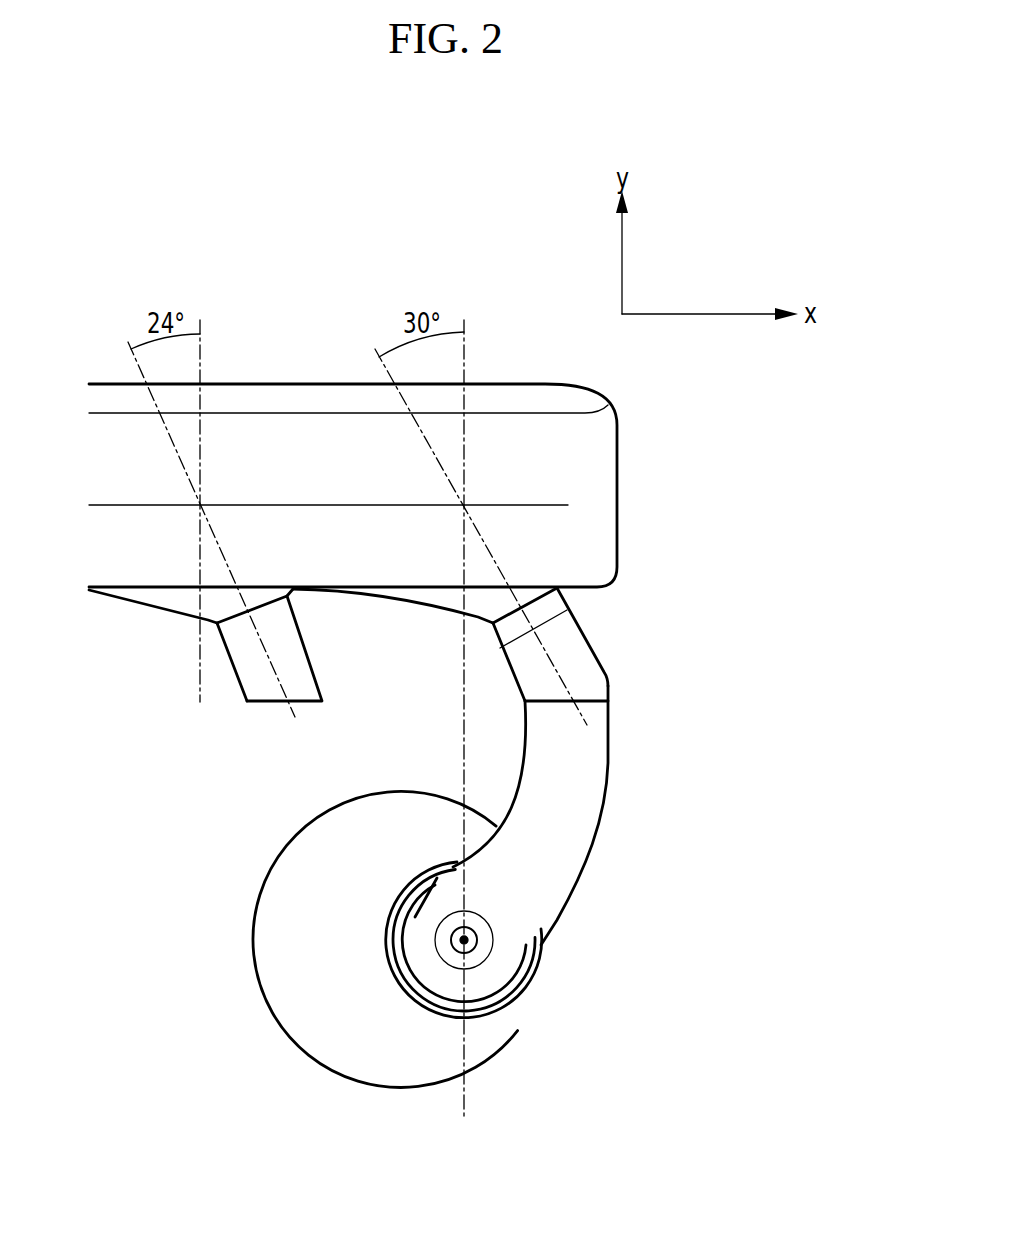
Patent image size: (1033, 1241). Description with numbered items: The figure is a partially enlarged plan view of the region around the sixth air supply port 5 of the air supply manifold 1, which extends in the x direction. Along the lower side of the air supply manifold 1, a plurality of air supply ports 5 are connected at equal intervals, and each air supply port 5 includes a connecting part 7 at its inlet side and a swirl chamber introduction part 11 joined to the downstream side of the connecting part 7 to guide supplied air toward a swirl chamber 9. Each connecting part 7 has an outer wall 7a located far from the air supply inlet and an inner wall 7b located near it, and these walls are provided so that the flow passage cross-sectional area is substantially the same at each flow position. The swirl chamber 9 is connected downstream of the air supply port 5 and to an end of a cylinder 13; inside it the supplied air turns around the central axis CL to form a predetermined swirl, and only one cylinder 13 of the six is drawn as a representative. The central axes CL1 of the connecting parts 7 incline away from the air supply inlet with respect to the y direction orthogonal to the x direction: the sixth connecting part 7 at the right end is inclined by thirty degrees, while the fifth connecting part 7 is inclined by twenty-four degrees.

The air supply manifold 1 is at (617, 460).
The air supply port 5 is at (467, 886).
The connecting part 7 is at (430, 669).
The outer wall 7a is at (300, 632).
The inner wall 7b is at (239, 680).
The swirl chamber 9 is at (502, 970).
The swirl chamber introduction part 11 is at (588, 795).
The cylinder 13 is at (253, 939).
The central axis CL is at (452, 942).
The central axis of connecting part CL1 is at (219, 545).